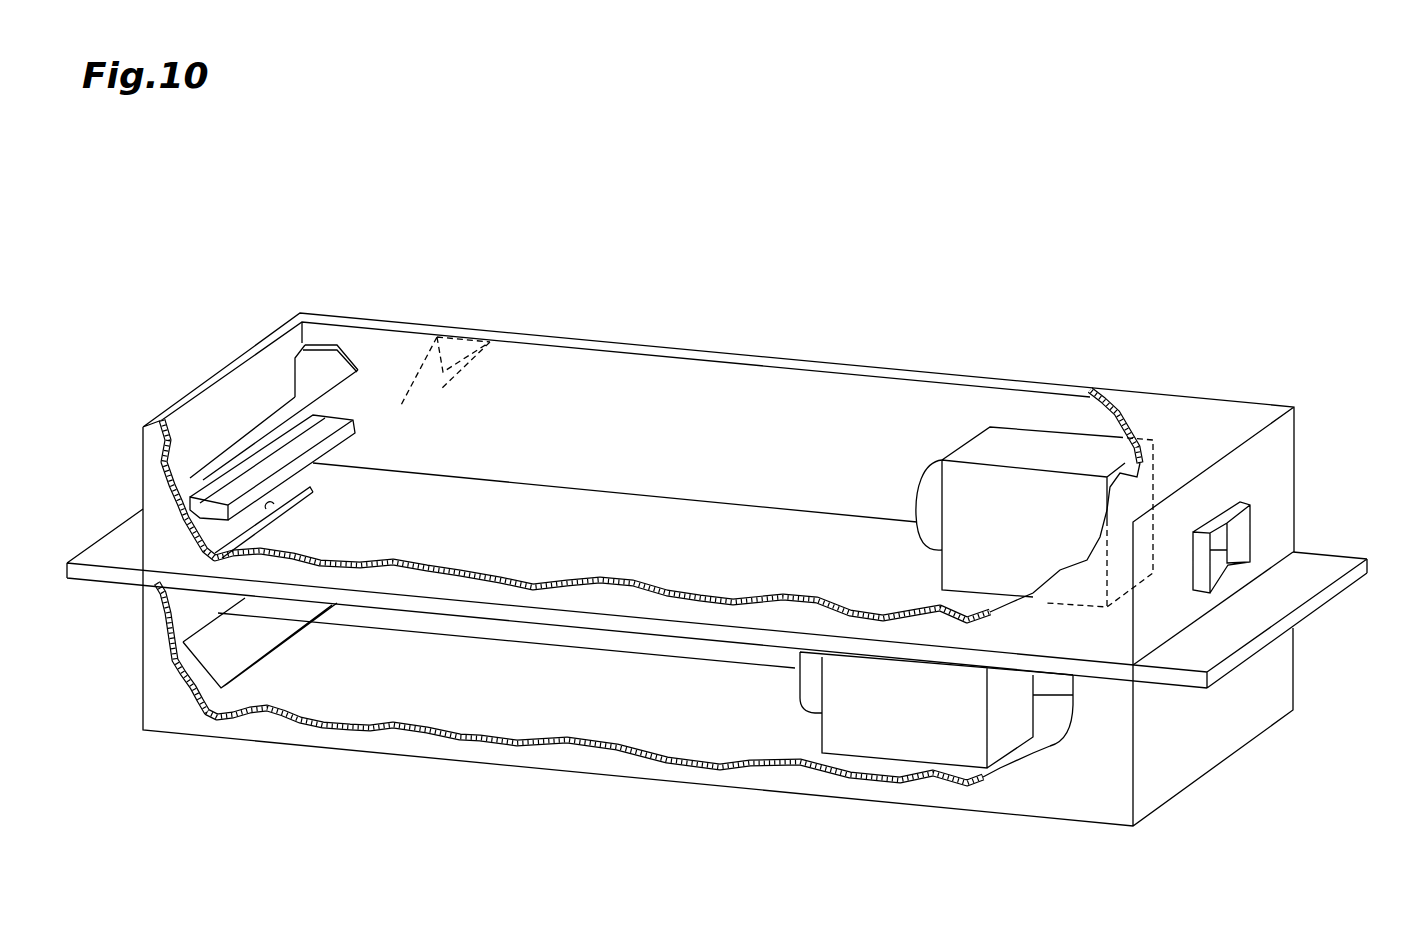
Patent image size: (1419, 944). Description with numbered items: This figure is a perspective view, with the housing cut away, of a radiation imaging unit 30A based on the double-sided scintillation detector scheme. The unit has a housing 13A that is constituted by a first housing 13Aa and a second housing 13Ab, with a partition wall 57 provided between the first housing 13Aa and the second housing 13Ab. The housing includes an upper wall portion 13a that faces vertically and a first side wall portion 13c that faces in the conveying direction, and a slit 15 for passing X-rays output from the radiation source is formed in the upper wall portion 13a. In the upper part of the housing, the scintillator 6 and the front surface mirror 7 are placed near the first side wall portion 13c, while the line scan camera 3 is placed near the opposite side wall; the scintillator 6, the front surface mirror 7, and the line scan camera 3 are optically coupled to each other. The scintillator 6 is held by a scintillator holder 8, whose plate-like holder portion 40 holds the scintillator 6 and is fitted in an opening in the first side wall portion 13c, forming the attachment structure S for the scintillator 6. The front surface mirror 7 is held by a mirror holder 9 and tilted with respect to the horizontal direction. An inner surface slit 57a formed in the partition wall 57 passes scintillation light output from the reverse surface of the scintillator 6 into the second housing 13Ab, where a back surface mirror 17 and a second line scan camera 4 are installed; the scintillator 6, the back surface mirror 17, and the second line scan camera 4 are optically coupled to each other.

The imaging unit 30A is at (982, 247).
The line scan camera 3 is at (1050, 448).
The second line scan camera 4 is at (905, 739).
The scintillator 6 is at (192, 507).
The front surface mirror 7 is at (358, 392).
The scintillator holder 8 is at (338, 457).
The mirror holder 9 is at (323, 335).
The housing 13A is at (788, 586).
The first housing 13Aa is at (1302, 522).
The second housing 13Ab is at (765, 683).
The upper wall portion 13a is at (1193, 413).
The first side wall portion 13c is at (217, 370).
The slit 15 is at (443, 372).
The back surface mirror 17 is at (243, 637).
The holder portion 40 is at (300, 488).
The partition wall 57 is at (672, 574).
The inner surface slit 57a is at (277, 493).
The attachment structure S is at (368, 449).